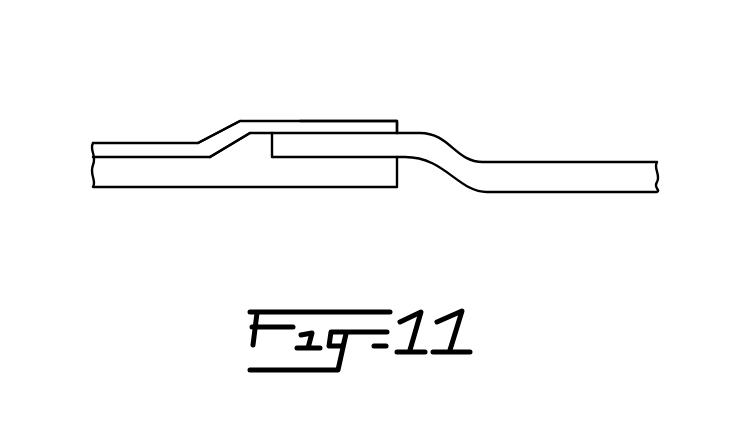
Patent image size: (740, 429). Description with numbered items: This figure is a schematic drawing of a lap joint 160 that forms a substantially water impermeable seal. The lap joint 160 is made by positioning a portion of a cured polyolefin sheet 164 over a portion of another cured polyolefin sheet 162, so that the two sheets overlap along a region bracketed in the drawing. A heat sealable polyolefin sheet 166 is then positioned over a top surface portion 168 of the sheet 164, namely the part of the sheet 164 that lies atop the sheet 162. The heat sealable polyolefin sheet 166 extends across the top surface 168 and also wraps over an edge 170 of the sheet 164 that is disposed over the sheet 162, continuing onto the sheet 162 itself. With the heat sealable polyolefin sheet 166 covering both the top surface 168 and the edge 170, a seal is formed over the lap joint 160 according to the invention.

The lap joint 160 is at (397, 203).
The cured polyolefin sheet 162 is at (140, 172).
The cured polyolefin sheet 164 is at (548, 172).
The heat sealable polyolefin sheet 166 is at (310, 120).
The top surface portion 168 is at (357, 133).
The edge 170 is at (262, 145).